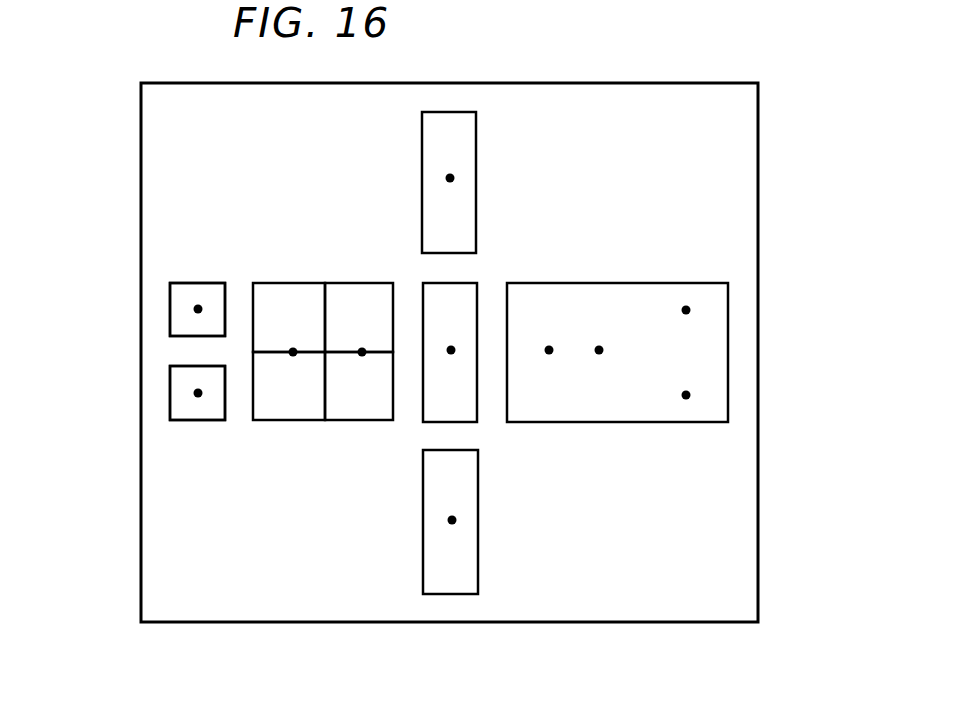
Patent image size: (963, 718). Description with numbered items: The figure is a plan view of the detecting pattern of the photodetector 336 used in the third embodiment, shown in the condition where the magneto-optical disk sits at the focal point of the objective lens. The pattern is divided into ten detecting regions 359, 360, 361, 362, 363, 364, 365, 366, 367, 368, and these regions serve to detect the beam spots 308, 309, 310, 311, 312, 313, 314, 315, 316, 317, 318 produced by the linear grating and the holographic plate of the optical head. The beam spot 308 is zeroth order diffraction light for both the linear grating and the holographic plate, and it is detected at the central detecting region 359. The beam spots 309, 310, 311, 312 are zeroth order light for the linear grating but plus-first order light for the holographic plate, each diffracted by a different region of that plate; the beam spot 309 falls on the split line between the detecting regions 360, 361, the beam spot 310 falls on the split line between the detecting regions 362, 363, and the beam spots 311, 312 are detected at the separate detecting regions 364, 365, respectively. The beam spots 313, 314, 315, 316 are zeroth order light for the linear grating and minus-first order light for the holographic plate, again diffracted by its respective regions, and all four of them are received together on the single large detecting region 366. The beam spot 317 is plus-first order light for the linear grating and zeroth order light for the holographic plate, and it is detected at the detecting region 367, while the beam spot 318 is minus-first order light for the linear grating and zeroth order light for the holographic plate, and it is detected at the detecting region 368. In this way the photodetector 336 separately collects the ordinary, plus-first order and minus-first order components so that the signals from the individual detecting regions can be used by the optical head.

The photodetector 336 is at (112, 638).
The beam spot 308 is at (451, 350).
The beam spot 309 is at (293, 352).
The beam spot 310 is at (362, 352).
The beam spot 311 is at (198, 309).
The beam spot 312 is at (198, 393).
The beam spot 313 is at (599, 350).
The beam spot 314 is at (549, 350).
The beam spot 315 is at (686, 310).
The beam spot 316 is at (686, 395).
The beam spot 317 is at (450, 178).
The beam spot 318 is at (452, 520).
The detecting region 359 is at (476, 404).
The detecting region 360 is at (306, 290).
The detecting region 361 is at (289, 403).
The detecting region 362 is at (356, 288).
The detecting region 363 is at (341, 406).
The detecting region 364 is at (183, 321).
The detecting region 365 is at (174, 403).
The detecting region 366 is at (706, 336).
The detecting region 367 is at (466, 148).
The detecting region 368 is at (468, 566).